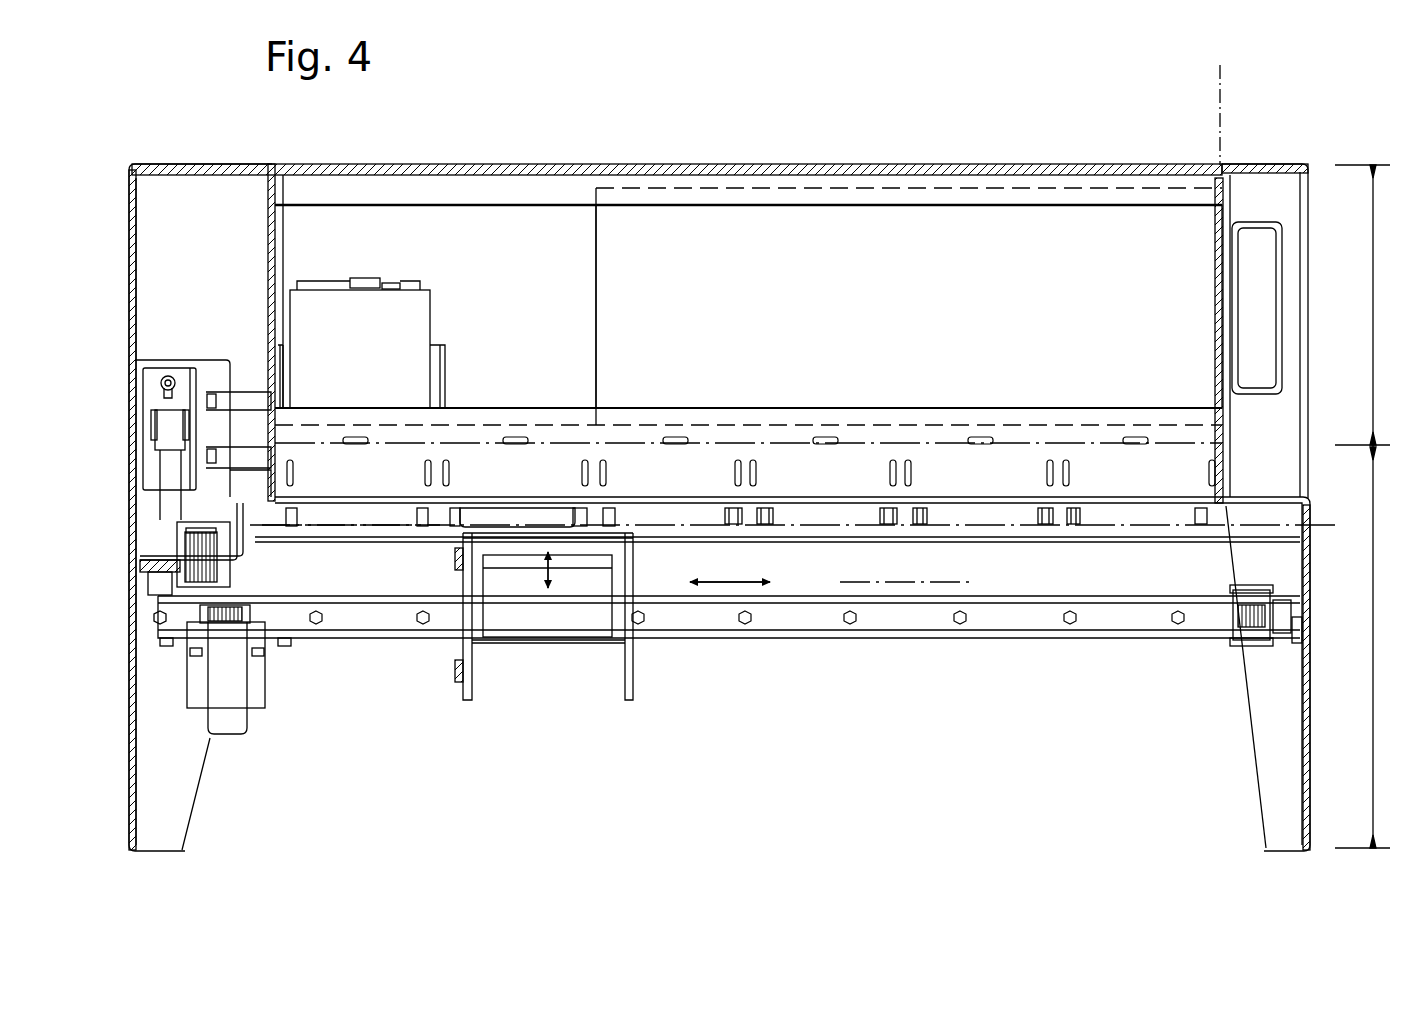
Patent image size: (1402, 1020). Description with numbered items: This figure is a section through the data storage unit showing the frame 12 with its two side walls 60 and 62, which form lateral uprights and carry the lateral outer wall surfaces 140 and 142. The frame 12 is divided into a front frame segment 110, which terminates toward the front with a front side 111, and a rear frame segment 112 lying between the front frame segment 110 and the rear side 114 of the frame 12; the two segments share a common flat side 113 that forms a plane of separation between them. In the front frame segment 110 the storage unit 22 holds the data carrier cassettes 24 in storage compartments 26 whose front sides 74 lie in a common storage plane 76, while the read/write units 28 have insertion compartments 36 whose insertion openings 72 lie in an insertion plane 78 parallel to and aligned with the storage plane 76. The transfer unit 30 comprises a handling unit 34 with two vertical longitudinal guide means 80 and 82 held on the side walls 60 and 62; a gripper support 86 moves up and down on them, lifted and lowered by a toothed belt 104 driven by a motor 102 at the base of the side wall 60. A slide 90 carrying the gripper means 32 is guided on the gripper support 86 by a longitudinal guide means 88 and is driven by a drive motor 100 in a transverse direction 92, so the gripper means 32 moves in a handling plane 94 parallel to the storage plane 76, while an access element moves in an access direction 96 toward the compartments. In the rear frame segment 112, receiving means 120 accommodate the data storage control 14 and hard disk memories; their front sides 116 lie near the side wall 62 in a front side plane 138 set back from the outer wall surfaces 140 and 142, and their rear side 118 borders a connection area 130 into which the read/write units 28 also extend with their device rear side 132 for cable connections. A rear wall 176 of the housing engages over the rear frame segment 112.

The frame 12 is at (1290, 425).
The data storage control 14 is at (985, 240).
The storage unit 22 is at (1165, 510).
The data carrier cassettes 24 is at (505, 630).
The storage compartments 26 is at (978, 510).
The read/write units 28 is at (400, 305).
The transfer unit 30 is at (643, 642).
The gripper means 32 is at (591, 645).
The handling unit 34 is at (795, 640).
The insertion compartments 36 is at (402, 518).
The side wall 60 is at (133, 738).
The side wall 62 is at (1311, 498).
The insertion openings 72 is at (313, 518).
The front sides 74 is at (1046, 525).
The storage plane 76 is at (1140, 530).
The insertion plane 78 is at (372, 545).
The longitudinal guide means 80 is at (150, 570).
The longitudinal guide means 82 is at (1300, 644).
The gripper support 86 is at (1134, 640).
The longitudinal guide means 88 is at (999, 628).
The slide 90 is at (454, 654).
The transverse direction 92 is at (732, 582).
The handling plane 94 is at (902, 582).
The access direction 96 is at (548, 570).
The drive motor 100 is at (254, 700).
The motor 102 is at (247, 400).
The toothed belt 104 is at (165, 485).
The front frame segment 110 is at (1362, 646).
The front side 111 is at (1260, 852).
The rear frame segment 112 is at (1362, 305).
The common flat side 113 is at (858, 445).
The rear side 114 is at (678, 165).
The front sides 116 is at (1212, 198).
The rear side 118 is at (590, 190).
The receiving means 120 is at (855, 190).
The connection area 130 is at (505, 245).
The device rear side 132 is at (365, 280).
The front side plane 138 is at (1222, 92).
The lateral outer wall surface 140 is at (1308, 185).
The lateral outer wall surface 142 is at (1311, 688).
The rear wall 176 is at (770, 165).